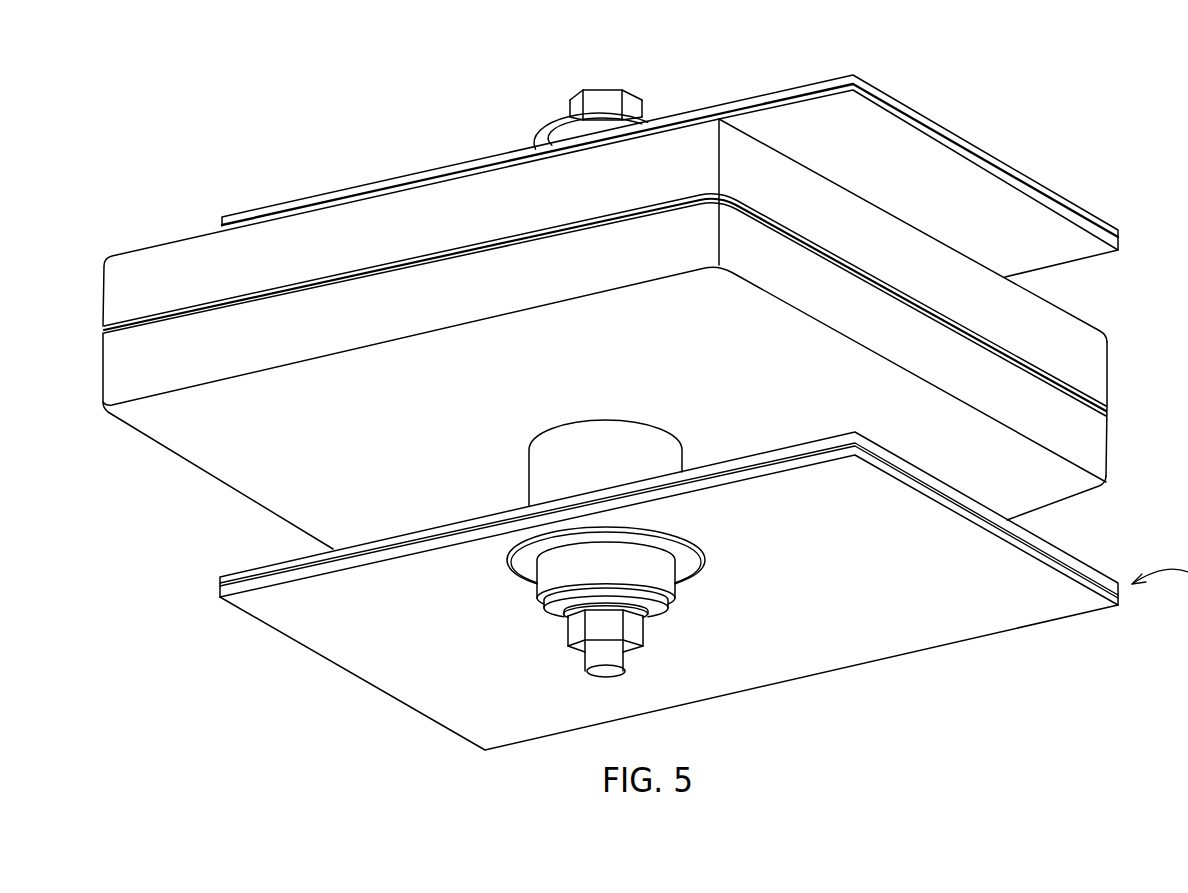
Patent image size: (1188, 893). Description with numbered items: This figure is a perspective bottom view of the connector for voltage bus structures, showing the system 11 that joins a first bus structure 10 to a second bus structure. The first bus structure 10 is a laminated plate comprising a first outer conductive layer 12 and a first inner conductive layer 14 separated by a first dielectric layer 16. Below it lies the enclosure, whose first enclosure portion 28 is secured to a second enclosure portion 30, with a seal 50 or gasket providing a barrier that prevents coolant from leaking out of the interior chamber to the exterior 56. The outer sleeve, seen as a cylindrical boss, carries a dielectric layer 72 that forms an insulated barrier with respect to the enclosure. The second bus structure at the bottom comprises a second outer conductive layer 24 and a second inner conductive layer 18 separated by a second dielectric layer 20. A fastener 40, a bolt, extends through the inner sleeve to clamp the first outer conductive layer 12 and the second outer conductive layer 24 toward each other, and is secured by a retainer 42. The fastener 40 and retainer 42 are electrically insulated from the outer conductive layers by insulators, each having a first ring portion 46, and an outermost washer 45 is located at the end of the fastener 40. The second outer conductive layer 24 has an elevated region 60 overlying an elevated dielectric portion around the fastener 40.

The first bus structure 10 is at (1093, 115).
The system 11 is at (1003, 748).
The first outer conductive layer 12 is at (1085, 200).
The first inner conductive layer 14 is at (1063, 241).
The first dielectric layer 16 is at (1119, 241).
The second inner conductive layer 18 is at (1088, 568).
The second dielectric layer 20 is at (1119, 598).
The second outer conductive layer 24 is at (1075, 593).
The first enclosure portion 28 is at (1030, 292).
The second enclosure portion 30 is at (978, 446).
The fastener 40 is at (598, 95).
The retainer 42 is at (643, 632).
The outermost washer 45 is at (548, 130).
The first ring portion 46 is at (535, 145).
The seal 50 is at (1102, 405).
The exterior 56 is at (1072, 315).
The elevated region 60 is at (683, 566).
The dielectric layer 72 is at (573, 470).